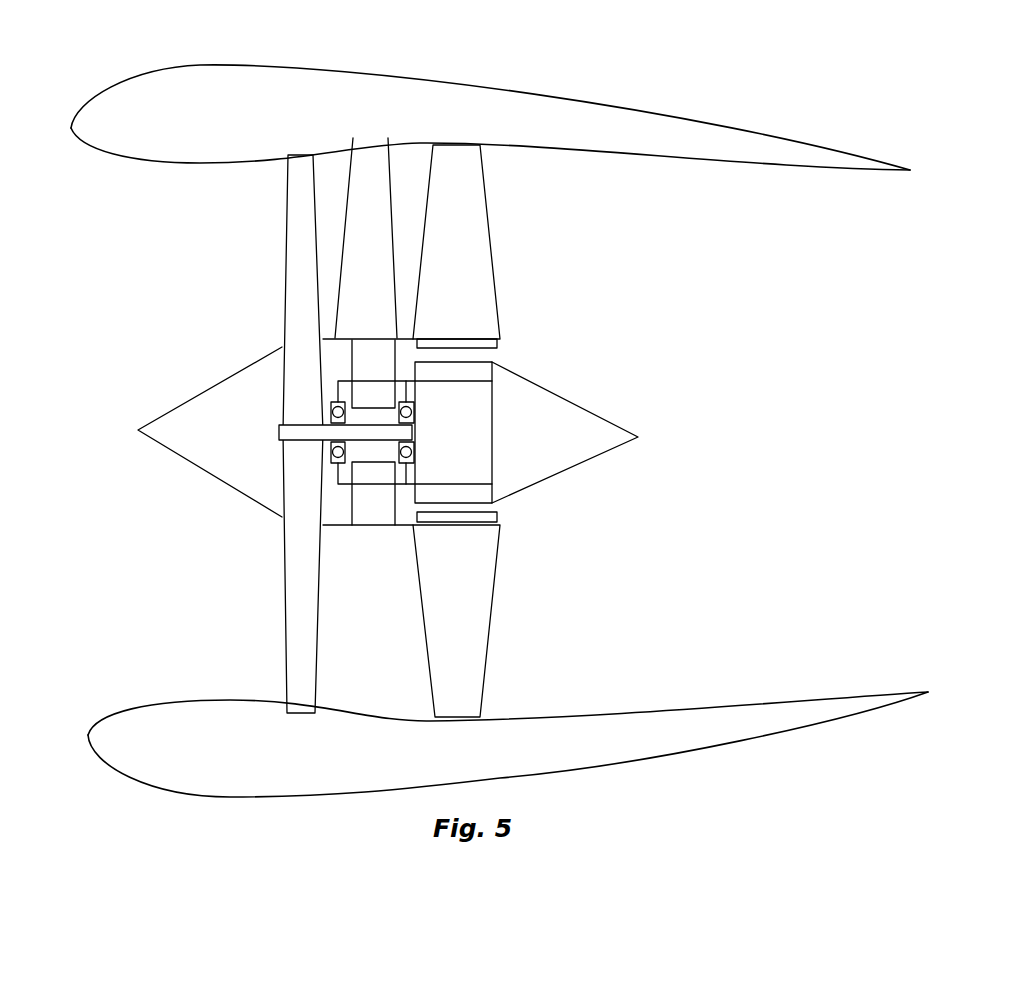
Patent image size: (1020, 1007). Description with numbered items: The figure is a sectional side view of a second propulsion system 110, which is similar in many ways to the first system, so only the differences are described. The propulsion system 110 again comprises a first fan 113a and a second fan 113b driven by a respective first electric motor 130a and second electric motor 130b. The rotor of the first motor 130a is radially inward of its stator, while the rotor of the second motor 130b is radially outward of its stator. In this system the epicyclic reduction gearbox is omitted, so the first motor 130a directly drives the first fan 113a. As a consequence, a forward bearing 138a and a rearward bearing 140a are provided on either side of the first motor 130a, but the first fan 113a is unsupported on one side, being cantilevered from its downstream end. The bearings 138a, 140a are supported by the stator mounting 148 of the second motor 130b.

The second propulsion system 110 is at (773, 277).
The first fan 113a is at (283, 303).
The second fan 113b is at (488, 213).
The first electric motor 130a is at (247, 372).
The second electric motor 130b is at (507, 472).
The forward bearing 138a is at (338, 463).
The rearward bearing 140a is at (406, 463).
The stator mounting 148 is at (407, 382).